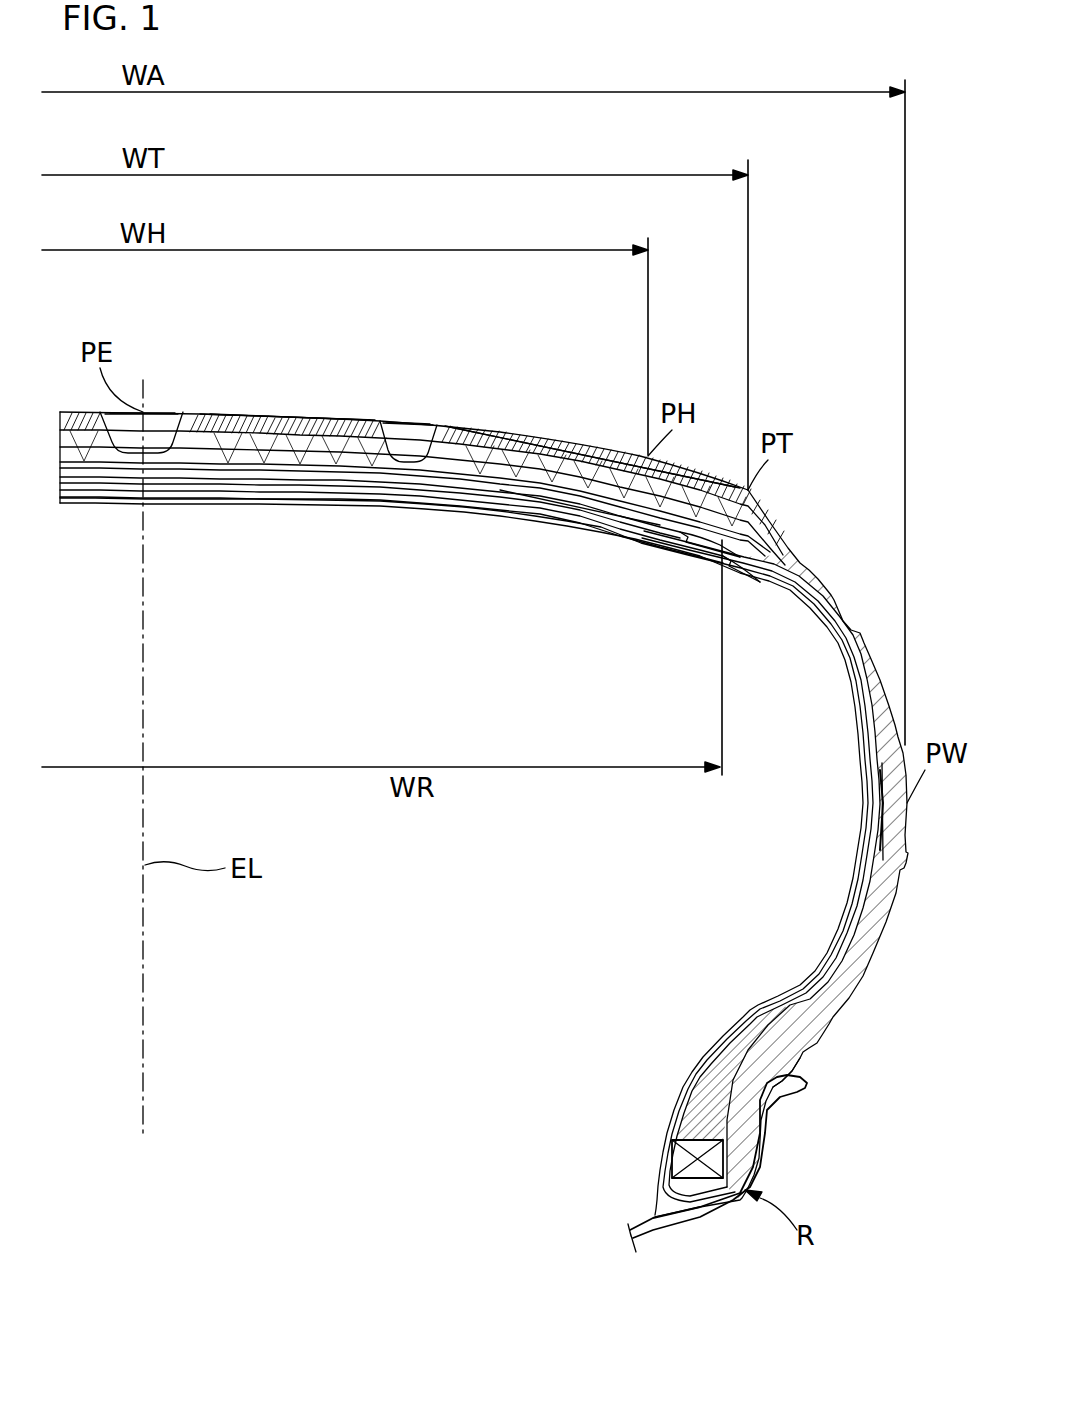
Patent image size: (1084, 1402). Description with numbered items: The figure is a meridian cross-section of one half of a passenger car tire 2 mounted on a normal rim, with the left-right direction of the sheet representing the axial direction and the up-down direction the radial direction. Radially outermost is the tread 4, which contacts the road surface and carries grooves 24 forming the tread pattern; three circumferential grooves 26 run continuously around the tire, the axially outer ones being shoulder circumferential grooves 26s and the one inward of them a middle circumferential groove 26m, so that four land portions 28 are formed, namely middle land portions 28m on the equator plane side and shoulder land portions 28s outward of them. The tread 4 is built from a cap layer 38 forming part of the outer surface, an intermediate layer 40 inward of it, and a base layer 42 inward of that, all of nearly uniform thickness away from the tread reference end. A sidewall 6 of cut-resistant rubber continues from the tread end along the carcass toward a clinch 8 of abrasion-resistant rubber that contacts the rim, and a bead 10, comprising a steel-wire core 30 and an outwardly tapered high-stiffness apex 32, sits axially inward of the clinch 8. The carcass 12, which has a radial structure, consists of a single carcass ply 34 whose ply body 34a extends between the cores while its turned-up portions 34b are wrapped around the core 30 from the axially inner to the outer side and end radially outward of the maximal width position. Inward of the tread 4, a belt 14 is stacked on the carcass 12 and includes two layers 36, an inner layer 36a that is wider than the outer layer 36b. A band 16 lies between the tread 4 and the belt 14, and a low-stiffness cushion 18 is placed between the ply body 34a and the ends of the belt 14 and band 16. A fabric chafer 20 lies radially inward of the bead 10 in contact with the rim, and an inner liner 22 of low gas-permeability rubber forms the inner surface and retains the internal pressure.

The tire 2 is at (808, 358).
The tread 4 is at (539, 425).
The sidewall 6 is at (897, 823).
The clinch 8 is at (790, 1045).
The bead 10 is at (595, 1090).
The carcass 12 is at (252, 510).
The belt 14 is at (295, 604).
The band 16 is at (247, 450).
The cushion 18 is at (700, 540).
The chafer 20 is at (652, 1206).
The inner liner 22 is at (848, 831).
The groove 24 is at (162, 420).
The circumferential groove 26 is at (269, 373).
The middle circumferential groove 26m is at (165, 350).
The shoulder circumferential groove 26s is at (394, 358).
The land portion 28 is at (300, 414).
The middle land portion 28m is at (290, 372).
The shoulder land portion 28s is at (592, 419).
The core 30 is at (677, 1157).
The apex 32 is at (700, 1103).
The carcass ply 34 is at (184, 488).
The ply body 34a is at (858, 902).
The turned-up portion 34b is at (857, 927).
The layer 36 is at (340, 488).
The inner layer 36a is at (400, 540).
The outer layer 36b is at (410, 547).
The cap layer 38 is at (465, 428).
The intermediate layer 40 is at (497, 447).
The base layer 42 is at (532, 477).